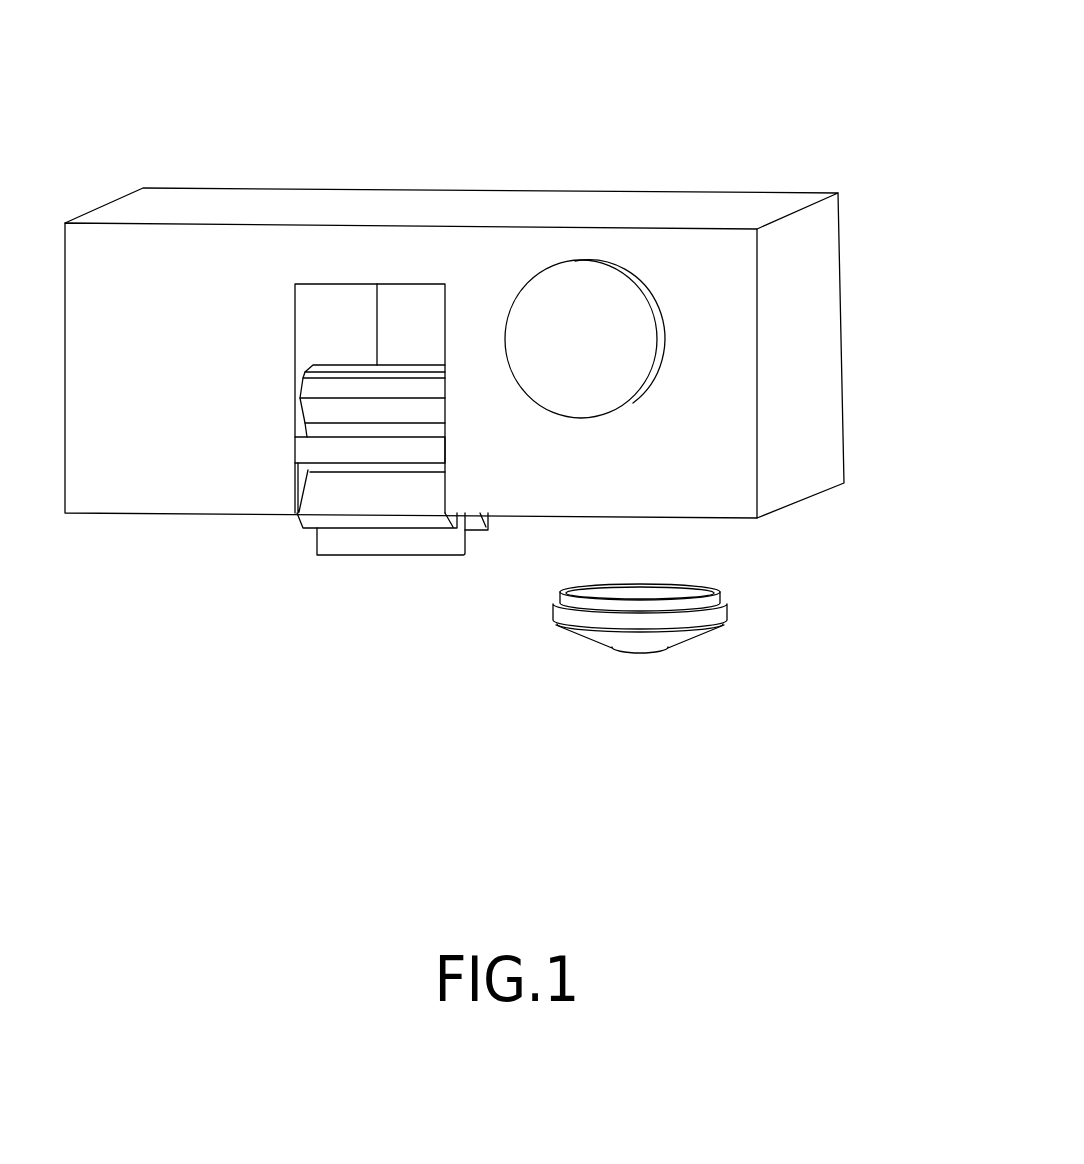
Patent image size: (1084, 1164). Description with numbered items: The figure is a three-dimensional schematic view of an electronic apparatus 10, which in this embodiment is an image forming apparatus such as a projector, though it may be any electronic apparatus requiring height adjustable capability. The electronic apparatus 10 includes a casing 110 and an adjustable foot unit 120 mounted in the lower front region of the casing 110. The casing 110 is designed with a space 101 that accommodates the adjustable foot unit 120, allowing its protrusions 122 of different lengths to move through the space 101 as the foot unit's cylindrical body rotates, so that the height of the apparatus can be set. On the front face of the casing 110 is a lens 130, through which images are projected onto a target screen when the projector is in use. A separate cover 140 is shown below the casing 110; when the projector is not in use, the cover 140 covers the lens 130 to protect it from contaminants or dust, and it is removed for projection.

The electronic apparatus 10 is at (658, 95).
The space 101 is at (397, 300).
The casing 110 is at (817, 328).
The adjustable foot unit 120 is at (321, 467).
The protrusions 122 is at (343, 520).
The lens 130 is at (564, 295).
The cover 140 is at (637, 653).